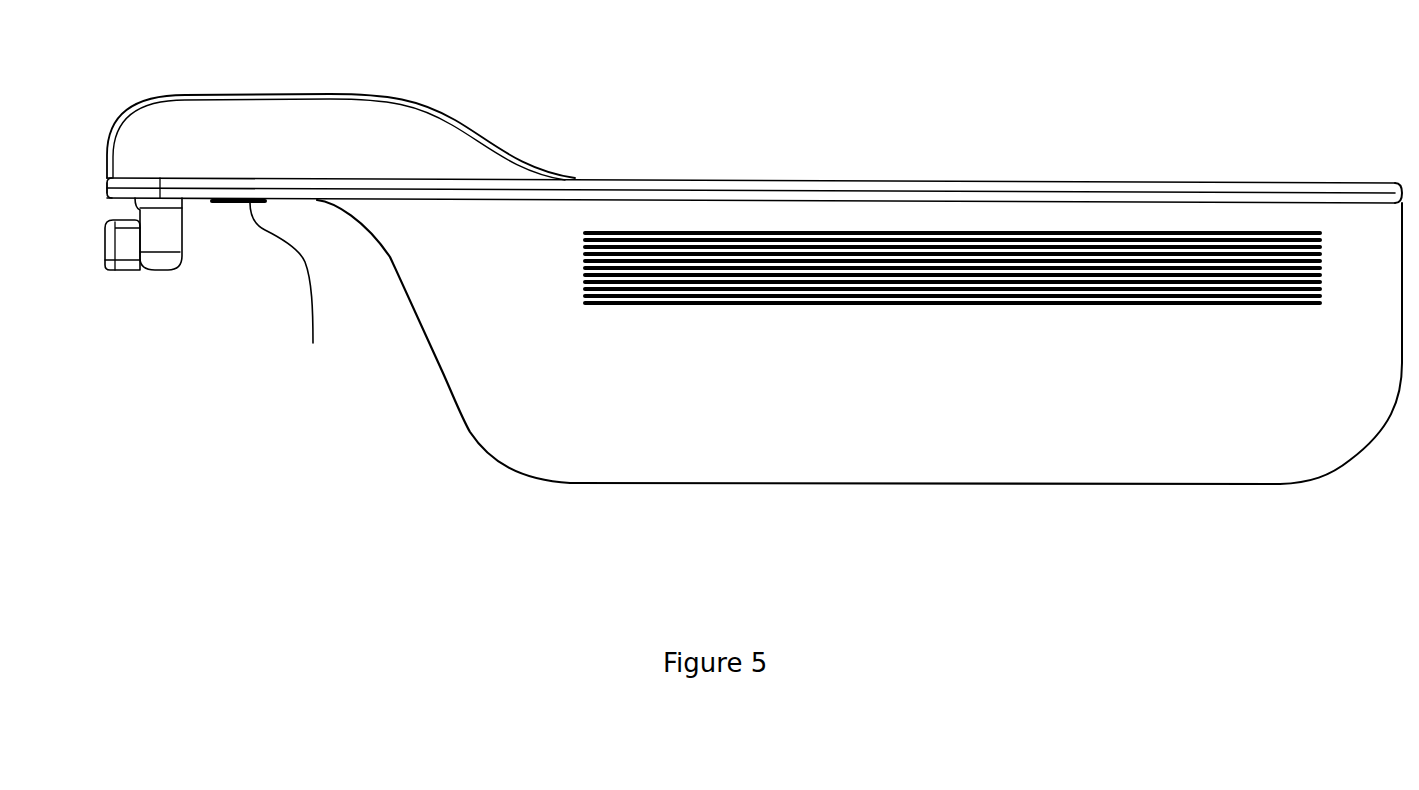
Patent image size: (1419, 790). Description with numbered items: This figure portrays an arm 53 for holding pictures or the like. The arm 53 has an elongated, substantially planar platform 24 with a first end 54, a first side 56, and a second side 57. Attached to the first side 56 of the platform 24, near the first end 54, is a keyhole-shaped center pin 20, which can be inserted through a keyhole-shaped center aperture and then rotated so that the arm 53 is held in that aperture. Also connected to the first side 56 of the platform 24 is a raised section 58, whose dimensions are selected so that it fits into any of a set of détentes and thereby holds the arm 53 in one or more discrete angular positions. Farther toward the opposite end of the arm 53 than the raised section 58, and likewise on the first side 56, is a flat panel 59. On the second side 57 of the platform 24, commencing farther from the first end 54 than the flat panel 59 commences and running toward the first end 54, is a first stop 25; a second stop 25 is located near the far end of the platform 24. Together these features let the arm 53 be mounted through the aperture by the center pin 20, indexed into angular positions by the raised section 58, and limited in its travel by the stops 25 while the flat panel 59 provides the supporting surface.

The keyhole-shaped center pin 20 is at (172, 247).
The elongated substantially planar platform 24 is at (1033, 188).
The stop 25 is at (360, 115).
The arm 53 is at (1040, 102).
The first end 54 is at (112, 182).
The first side 56 is at (1325, 203).
The second side 57 is at (1236, 181).
The raised section 58 is at (286, 289).
The flat panel 59 is at (938, 470).